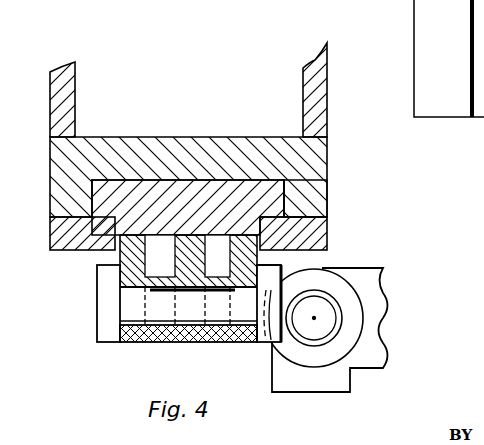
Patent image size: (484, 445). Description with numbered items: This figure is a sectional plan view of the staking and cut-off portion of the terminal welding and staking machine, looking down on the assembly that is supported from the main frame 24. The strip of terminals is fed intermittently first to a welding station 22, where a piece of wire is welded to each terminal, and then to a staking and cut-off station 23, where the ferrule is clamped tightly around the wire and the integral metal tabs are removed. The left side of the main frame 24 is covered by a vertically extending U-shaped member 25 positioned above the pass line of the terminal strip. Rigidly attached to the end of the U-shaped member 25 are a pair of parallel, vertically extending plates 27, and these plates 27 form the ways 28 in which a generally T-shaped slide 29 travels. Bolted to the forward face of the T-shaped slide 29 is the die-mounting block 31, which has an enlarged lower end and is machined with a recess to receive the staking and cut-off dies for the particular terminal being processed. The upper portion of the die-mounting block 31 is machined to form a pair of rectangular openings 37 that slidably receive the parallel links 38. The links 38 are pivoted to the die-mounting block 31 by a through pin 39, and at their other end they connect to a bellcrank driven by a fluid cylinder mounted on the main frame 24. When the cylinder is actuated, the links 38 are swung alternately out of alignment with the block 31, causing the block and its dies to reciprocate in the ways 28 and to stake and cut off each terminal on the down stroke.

The welding station 22 is at (395, 292).
The staking and cut-off station 23 is at (86, 303).
The main frame 24 is at (63, 84).
The U-shaped member 25 is at (146, 150).
The plates 27 is at (60, 240).
The ways 28 is at (285, 208).
The T-shaped slide 29 is at (202, 190).
The die-mounting block 31 is at (262, 262).
The rectangular openings 37 is at (156, 252).
The links 38 is at (162, 341).
The through pin 39 is at (133, 313).